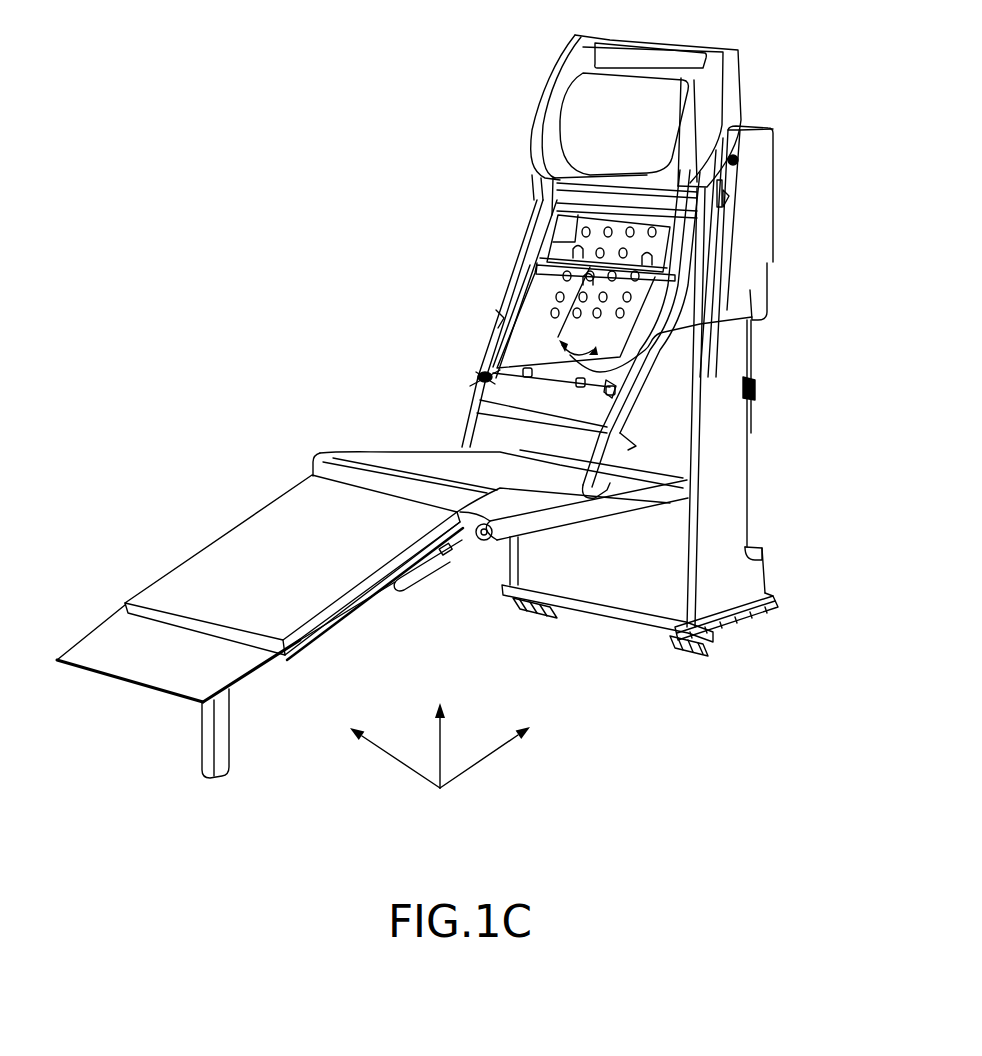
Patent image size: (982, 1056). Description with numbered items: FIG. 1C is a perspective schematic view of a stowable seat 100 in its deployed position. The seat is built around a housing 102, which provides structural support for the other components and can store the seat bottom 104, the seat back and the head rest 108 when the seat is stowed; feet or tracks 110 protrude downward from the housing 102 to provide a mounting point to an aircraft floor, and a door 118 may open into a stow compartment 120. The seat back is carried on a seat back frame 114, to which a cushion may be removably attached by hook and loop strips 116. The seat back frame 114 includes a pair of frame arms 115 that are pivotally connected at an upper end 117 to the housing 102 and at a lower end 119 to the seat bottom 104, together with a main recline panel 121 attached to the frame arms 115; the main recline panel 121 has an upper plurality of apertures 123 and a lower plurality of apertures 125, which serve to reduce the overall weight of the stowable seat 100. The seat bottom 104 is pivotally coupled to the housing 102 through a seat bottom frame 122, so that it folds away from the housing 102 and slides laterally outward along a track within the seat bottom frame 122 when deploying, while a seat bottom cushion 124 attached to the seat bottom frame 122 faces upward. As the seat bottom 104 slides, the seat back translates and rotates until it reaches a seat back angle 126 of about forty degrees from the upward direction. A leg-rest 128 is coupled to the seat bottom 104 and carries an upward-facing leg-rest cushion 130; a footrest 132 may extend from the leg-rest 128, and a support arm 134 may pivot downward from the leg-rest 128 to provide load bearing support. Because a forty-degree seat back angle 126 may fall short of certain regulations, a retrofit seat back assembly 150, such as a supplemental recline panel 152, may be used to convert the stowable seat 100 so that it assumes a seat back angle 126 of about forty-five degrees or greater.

The stowable seat 100 is at (254, 73).
The housing 102 is at (722, 522).
The seat bottom 104 is at (418, 474).
The head rest 108 is at (578, 118).
The feet or tracks 110 is at (775, 600).
The seat back frame 114 is at (474, 292).
The frame arms 115 is at (500, 317).
The hook and loop strips 116 is at (585, 240).
The upper end 117 is at (760, 158).
The door 118 is at (641, 603).
The lower end 119 is at (660, 443).
The stow compartment 120 is at (658, 603).
The main recline panel 121 is at (560, 268).
The seat bottom frame 122 is at (552, 518).
The upper plurality of apertures 123 is at (594, 220).
The seat bottom cushion 124 is at (335, 458).
The lower plurality of apertures 125 is at (485, 377).
The seat back angle 126 is at (752, 317).
The leg-rest 128 is at (218, 563).
The leg-rest cushion 130 is at (157, 605).
The footrest 132 is at (108, 653).
The support arm 134 is at (205, 747).
The retrofit seat back assembly 150 is at (660, 300).
The supplemental recline panel 152 is at (510, 423).